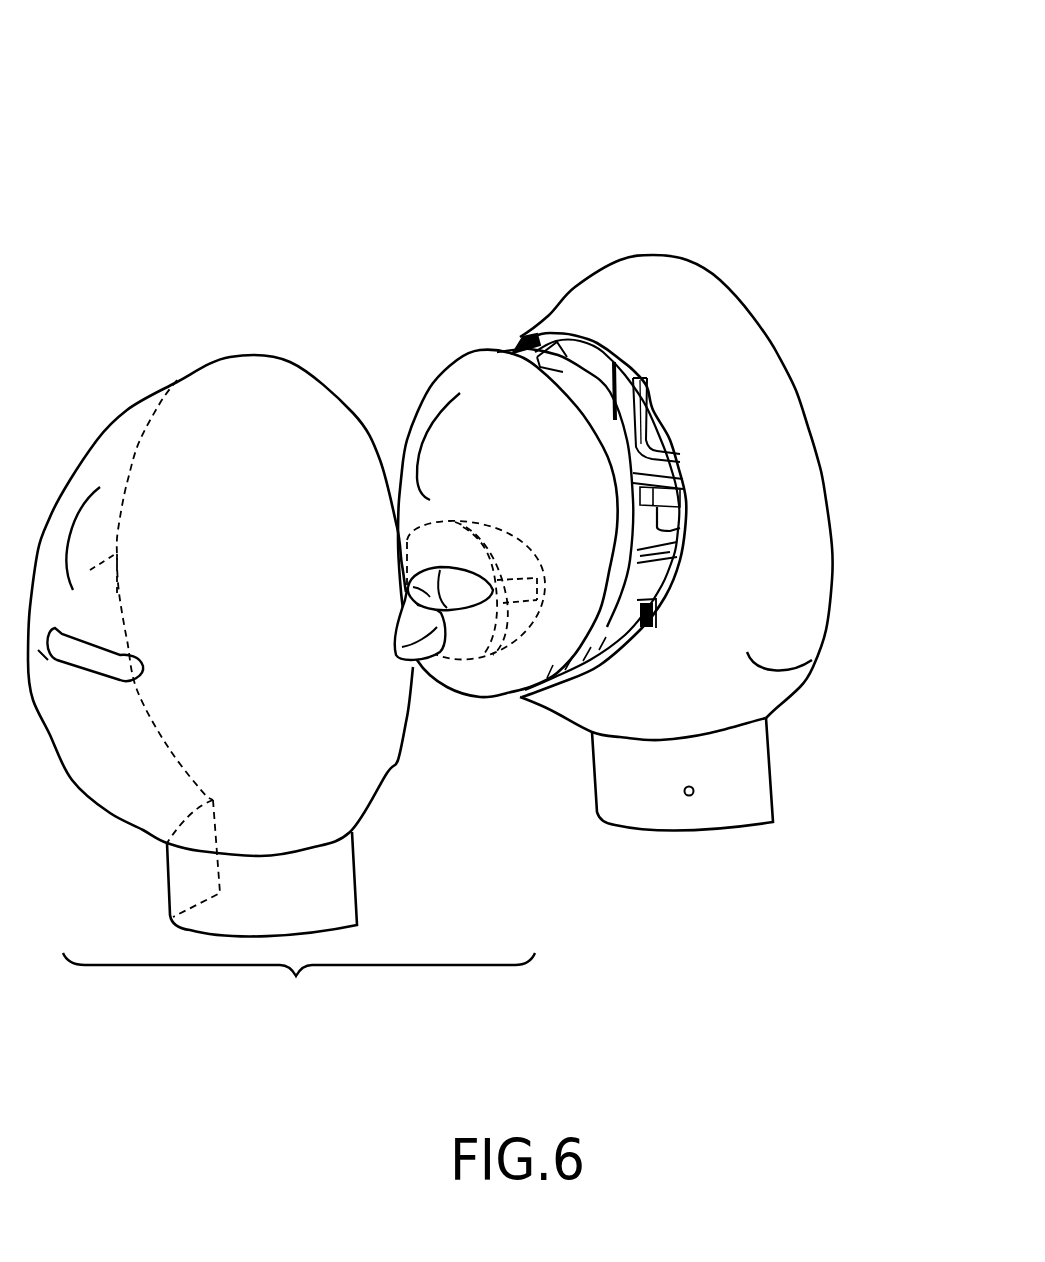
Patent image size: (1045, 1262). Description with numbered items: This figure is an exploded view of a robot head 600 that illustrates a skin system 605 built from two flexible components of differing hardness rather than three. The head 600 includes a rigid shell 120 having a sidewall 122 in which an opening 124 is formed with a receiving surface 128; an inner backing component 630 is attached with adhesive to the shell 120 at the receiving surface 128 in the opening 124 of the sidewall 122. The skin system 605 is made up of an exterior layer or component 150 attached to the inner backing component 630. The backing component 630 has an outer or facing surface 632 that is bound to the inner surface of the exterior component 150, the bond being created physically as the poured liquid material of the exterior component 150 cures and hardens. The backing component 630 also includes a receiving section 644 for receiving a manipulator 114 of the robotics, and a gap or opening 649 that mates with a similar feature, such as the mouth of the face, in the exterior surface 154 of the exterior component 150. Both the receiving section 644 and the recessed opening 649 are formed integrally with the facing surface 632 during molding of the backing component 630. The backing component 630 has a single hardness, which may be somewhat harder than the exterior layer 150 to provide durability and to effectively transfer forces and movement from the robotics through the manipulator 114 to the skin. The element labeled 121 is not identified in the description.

The robot head 600 is at (648, 166).
The rigid shell 120 is at (750, 280).
The sidewall 122 is at (812, 660).
The receiving surface 128 is at (513, 353).
The opening 124 is at (668, 424).
The manipulator 114 is at (670, 553).
The contact pad 121 is at (646, 628).
The inner backing component 630 is at (414, 363).
The outer or facing surface 632 is at (547, 491).
The gap or opening 649 is at (423, 582).
The receiving section 644 is at (522, 618).
The exterior layer or component 150 is at (124, 413).
The exterior surface 154 is at (277, 609).
The skin system 605 is at (299, 984).